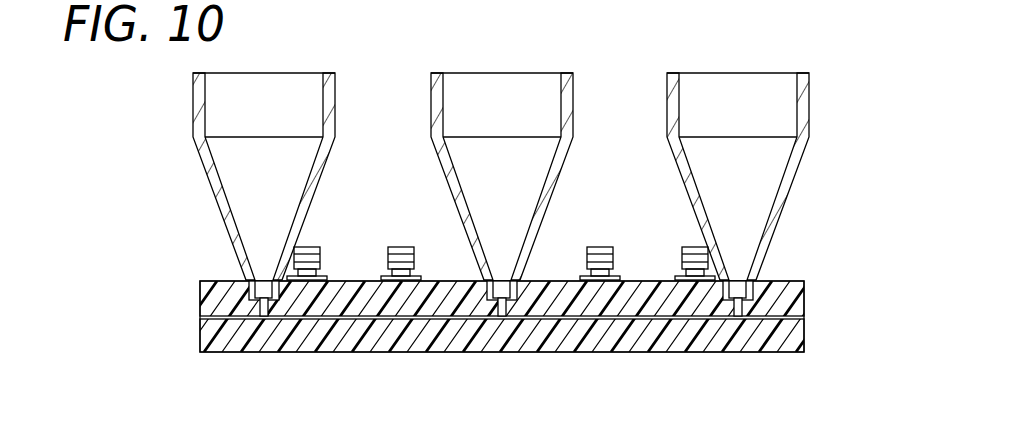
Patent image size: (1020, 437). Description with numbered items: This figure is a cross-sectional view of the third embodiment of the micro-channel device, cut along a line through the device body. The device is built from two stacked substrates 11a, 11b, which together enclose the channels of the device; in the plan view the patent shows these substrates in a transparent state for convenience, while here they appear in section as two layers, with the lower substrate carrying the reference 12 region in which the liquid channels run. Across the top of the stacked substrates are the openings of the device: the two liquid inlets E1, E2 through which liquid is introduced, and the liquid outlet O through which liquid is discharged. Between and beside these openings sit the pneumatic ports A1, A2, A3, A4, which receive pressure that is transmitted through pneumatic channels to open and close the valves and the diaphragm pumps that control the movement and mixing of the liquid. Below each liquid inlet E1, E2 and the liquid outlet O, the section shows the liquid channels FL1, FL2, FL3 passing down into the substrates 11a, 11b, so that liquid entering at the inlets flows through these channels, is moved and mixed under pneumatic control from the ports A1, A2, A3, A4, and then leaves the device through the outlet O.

The substrate 12 is at (202, 316).
The substrate 11a is at (805, 282).
The substrate 11b is at (805, 334).
The liquid inlet E1 is at (740, 280).
The liquid inlet E2 is at (262, 279).
The liquid outlet O is at (505, 279).
The pneumatic port A1 is at (681, 254).
The pneumatic port A2 is at (318, 254).
The pneumatic port A3 is at (588, 254).
The pneumatic port A4 is at (414, 254).
The liquid channel FL1 is at (738, 318).
The liquid channel FL2 is at (262, 318).
The liquid channel FL3 is at (500, 318).